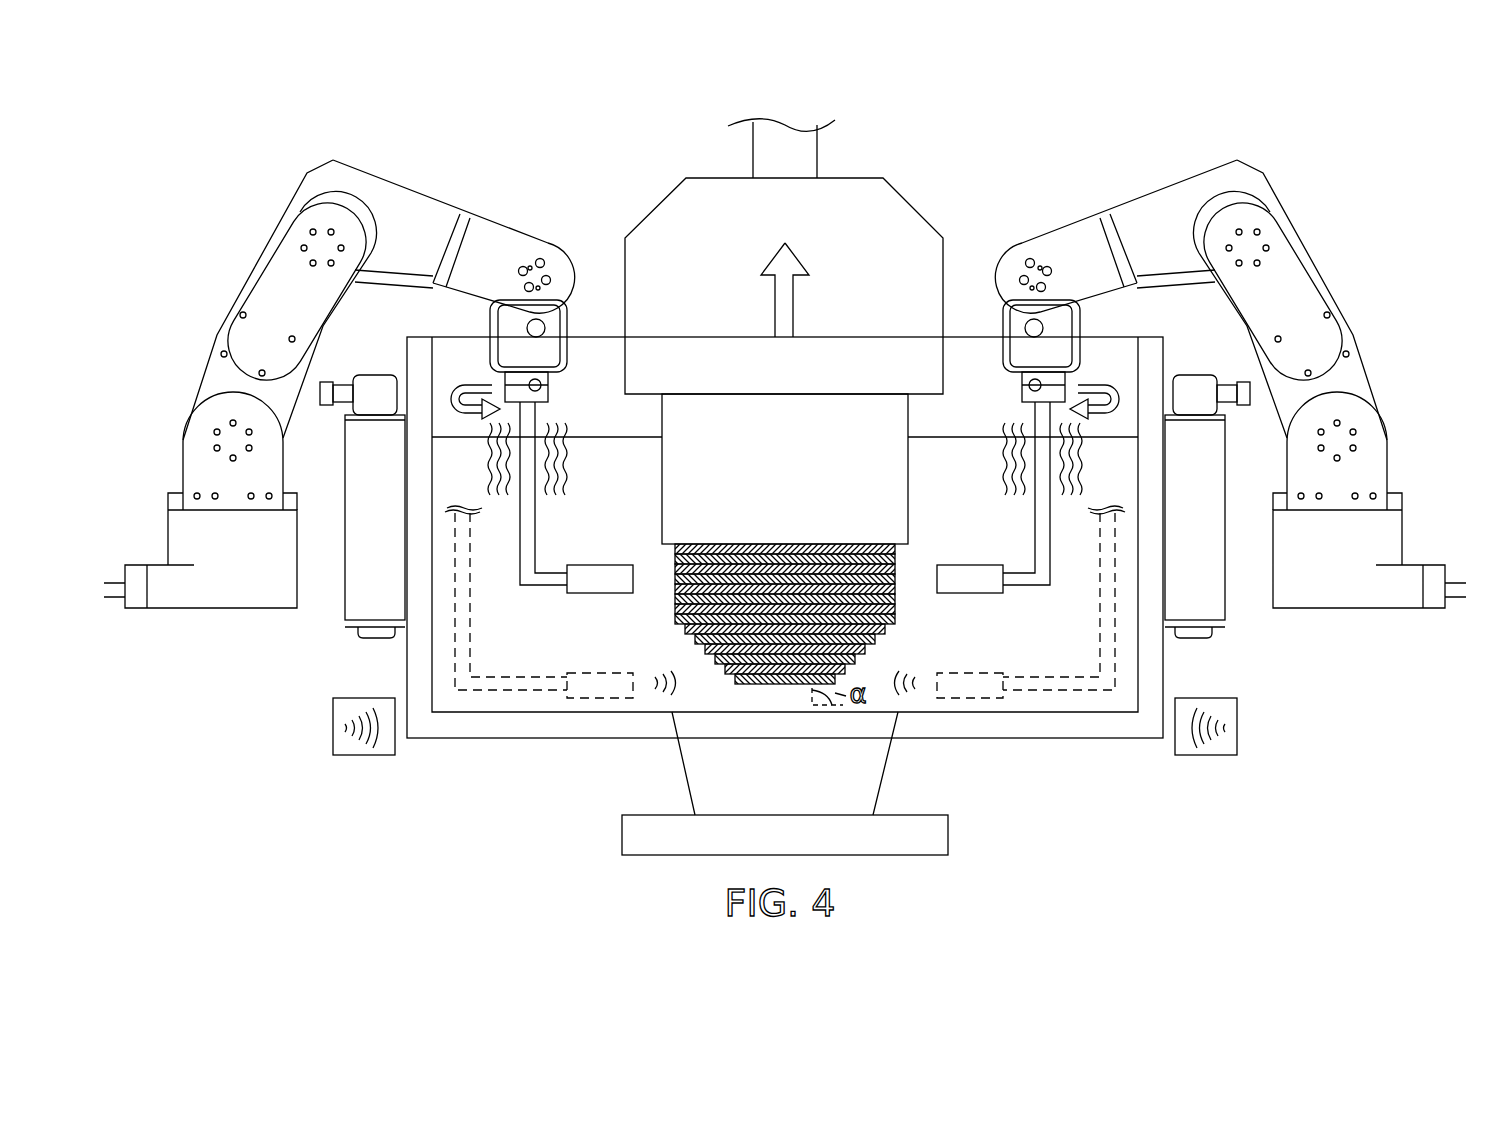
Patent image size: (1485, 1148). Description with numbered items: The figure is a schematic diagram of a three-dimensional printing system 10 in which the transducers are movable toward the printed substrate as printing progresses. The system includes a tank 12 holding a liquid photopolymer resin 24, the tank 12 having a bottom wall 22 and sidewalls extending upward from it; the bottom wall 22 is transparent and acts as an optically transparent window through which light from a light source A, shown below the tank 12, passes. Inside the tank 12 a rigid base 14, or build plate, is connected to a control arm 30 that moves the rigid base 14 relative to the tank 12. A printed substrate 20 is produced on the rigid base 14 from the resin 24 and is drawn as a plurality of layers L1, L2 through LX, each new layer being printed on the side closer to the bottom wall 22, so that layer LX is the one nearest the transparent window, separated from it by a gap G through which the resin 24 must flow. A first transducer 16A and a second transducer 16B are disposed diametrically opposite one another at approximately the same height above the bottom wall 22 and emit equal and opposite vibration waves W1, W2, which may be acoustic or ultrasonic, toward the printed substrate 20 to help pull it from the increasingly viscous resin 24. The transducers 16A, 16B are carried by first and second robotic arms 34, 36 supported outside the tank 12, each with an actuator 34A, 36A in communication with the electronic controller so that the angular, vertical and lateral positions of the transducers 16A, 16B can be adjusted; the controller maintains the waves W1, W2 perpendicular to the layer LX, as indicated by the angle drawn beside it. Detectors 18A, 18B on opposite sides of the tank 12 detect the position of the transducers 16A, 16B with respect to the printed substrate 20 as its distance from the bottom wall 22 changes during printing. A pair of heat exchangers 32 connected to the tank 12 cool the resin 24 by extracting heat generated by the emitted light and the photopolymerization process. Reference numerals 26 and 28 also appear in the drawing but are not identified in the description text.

The 3D printing system 10 is at (1088, 114).
The tank 12 is at (1172, 663).
The rigid base 14 is at (662, 465).
The first transducer 16A is at (590, 565).
The second transducer 16B is at (962, 565).
The detector 18A is at (333, 737).
The detector 18B is at (1237, 737).
The printed substrate 20 is at (652, 630).
The bottom wall 22 is at (1070, 705).
The liquid photopolymer resin 24 is at (945, 437).
The fluid conduit 26 is at (433, 692).
The interface region 28 is at (662, 556).
The control arm 30 is at (817, 150).
The heat exchanger 32 is at (345, 593).
The first robotic arm 34 is at (211, 264).
The actuator 34A is at (548, 398).
The second robotic arm 36 is at (1359, 264).
The actuator 36A is at (1020, 398).
The first layer L1 is at (797, 550).
The second layer L2 is at (851, 560).
The layer LX is at (838, 678).
The gap G is at (725, 712).
The first vibration wave W1 is at (748, 684).
The second vibration wave W2 is at (783, 684).
The light source A is at (940, 855).